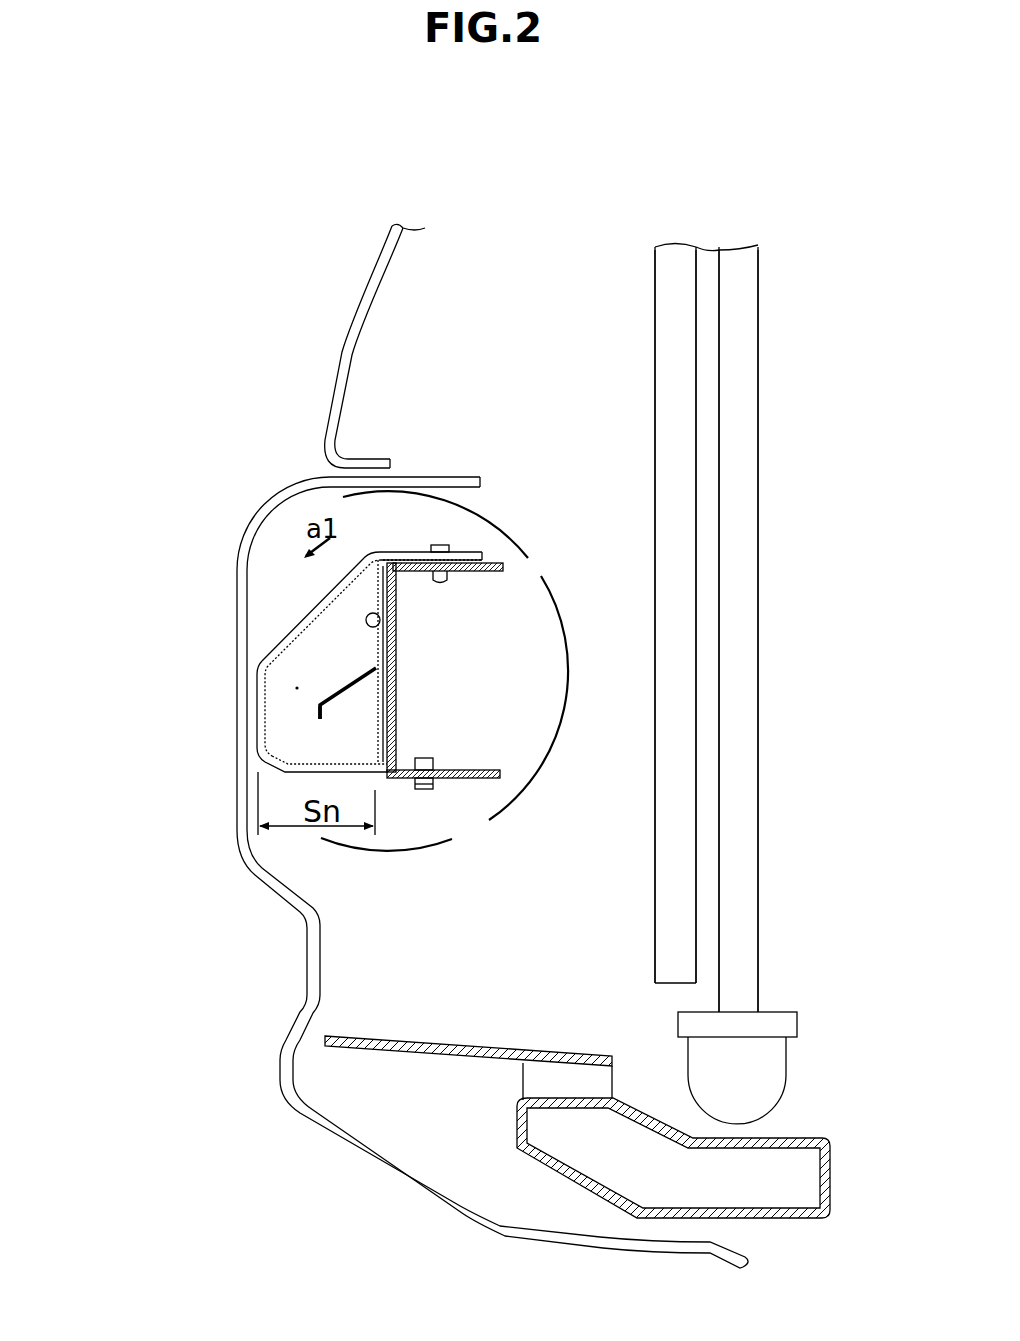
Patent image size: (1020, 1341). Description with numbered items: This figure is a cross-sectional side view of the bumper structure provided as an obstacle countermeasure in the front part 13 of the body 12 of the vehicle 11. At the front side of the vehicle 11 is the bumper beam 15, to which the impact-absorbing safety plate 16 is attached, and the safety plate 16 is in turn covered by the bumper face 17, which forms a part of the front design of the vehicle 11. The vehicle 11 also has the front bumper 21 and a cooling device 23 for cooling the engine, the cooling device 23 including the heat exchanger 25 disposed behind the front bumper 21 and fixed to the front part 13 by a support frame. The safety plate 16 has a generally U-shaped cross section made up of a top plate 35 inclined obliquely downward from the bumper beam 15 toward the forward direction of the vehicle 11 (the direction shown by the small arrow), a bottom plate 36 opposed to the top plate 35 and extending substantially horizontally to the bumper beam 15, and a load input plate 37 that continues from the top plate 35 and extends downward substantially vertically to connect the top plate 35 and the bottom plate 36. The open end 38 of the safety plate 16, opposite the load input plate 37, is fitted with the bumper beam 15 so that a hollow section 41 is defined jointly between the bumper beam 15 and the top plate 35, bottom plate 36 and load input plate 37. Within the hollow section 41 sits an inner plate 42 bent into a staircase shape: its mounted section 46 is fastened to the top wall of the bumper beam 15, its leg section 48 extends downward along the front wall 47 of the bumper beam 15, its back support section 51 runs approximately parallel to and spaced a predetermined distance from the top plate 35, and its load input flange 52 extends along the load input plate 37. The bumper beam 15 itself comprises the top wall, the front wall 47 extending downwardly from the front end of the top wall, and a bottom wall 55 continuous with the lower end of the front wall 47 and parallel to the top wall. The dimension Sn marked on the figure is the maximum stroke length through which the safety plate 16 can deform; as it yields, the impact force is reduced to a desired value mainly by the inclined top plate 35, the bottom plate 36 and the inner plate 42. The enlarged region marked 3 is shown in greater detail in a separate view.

The enlarged portion 3 is at (538, 768).
The vehicle 11 is at (343, 157).
The body 12 is at (558, 440).
The front part 13 is at (830, 183).
The bumper beam 15 is at (455, 667).
The safety plate 16 is at (327, 663).
The bumper face 17 is at (258, 880).
The front bumper 21 is at (232, 520).
The cooling device 23 is at (758, 212).
The heat exchanger 25 is at (760, 515).
The top plate 35 is at (330, 602).
The bottom plate 36 is at (320, 773).
The load input plate 37 is at (257, 728).
The open end 38 is at (468, 560).
The hollow section 41 is at (297, 688).
The inner plate 42 is at (328, 670).
The mounted section 46 is at (490, 566).
The front wall 47 is at (485, 673).
The leg section 48 is at (380, 626).
The back support section 51 is at (377, 716).
The load input flange 52 is at (320, 713).
The bottom wall 55 is at (470, 778).